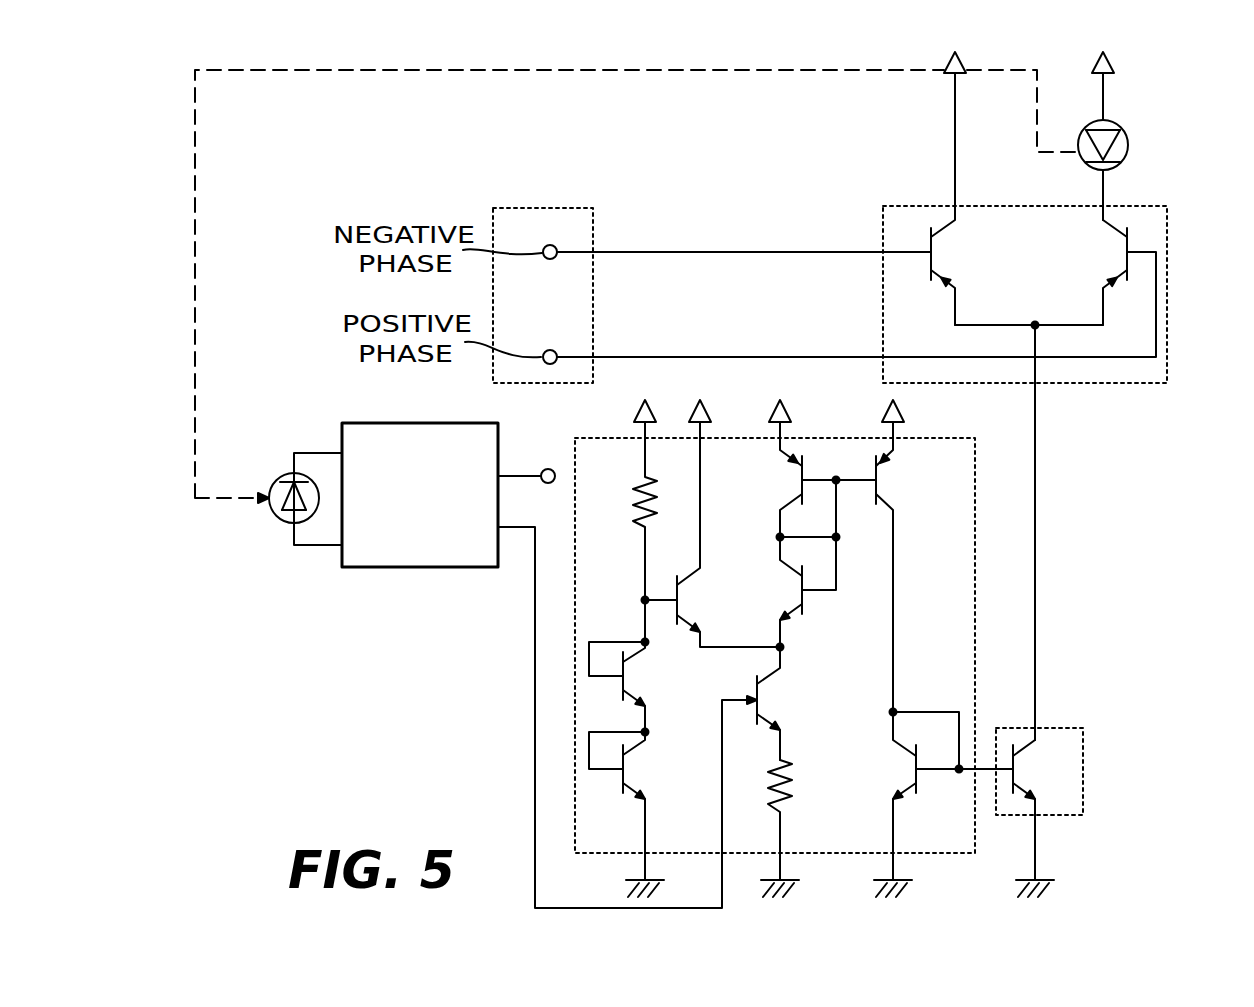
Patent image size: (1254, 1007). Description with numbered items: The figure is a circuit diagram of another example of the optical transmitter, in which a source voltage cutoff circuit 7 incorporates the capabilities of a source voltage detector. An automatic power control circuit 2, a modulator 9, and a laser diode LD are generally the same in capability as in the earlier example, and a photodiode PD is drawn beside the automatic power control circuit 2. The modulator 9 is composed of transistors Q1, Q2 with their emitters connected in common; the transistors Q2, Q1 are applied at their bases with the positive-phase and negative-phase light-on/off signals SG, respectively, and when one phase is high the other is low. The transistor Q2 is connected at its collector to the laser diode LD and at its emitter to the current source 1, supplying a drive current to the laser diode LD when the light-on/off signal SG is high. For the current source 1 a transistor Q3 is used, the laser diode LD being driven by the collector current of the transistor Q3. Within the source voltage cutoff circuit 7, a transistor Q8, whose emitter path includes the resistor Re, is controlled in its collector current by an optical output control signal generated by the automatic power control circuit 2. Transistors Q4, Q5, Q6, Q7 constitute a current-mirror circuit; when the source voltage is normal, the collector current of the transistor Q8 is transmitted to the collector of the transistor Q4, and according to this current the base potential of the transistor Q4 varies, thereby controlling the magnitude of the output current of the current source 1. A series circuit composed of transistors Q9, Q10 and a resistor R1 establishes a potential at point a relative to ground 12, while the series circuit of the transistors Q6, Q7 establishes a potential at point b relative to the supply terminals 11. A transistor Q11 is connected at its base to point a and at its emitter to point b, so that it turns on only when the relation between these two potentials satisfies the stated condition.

The current source 1 is at (1083, 780).
The automatic power control circuit 2 is at (405, 423).
The source voltage cutoff circuit 7 is at (976, 535).
The modulator 9 is at (924, 206).
The power supply terminal 11 is at (946, 64).
The ground 12 is at (630, 880).
The laser diode LD is at (1128, 145).
The photodiode PD is at (283, 516).
The light-on/off signal SG is at (535, 208).
The resistor R1 is at (623, 511).
The emitter resistor Re is at (794, 828).
The transistor Q1 is at (955, 199).
The transistor Q2 is at (1102, 247).
The transistor Q3 is at (1038, 818).
The transistor Q4 is at (936, 803).
The transistor Q5 is at (900, 567).
The transistor Q6 is at (808, 479).
The transistor Q7 is at (796, 563).
The transistor Q8 is at (781, 703).
The transistor Q9 is at (630, 805).
The transistor Q10 is at (637, 686).
The transistor Q11 is at (712, 534).
The point a is at (635, 612).
The point b is at (791, 646).